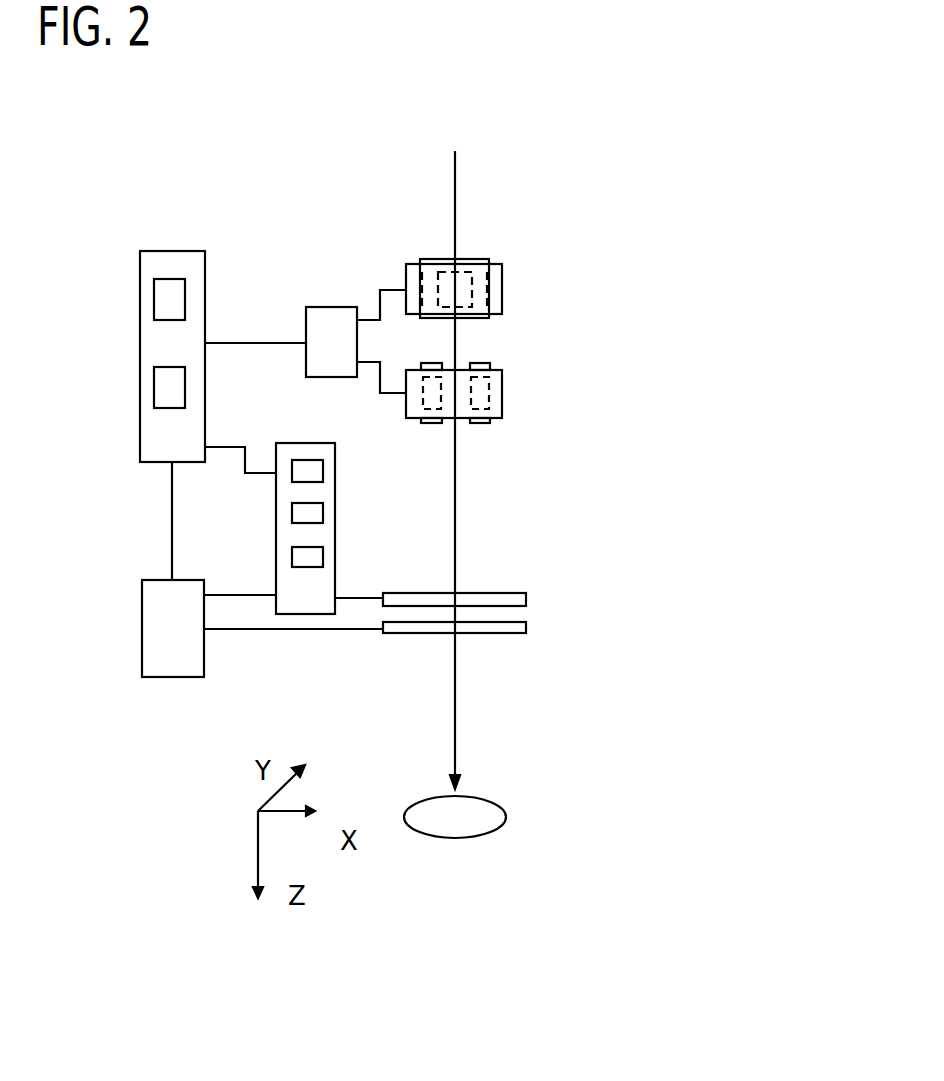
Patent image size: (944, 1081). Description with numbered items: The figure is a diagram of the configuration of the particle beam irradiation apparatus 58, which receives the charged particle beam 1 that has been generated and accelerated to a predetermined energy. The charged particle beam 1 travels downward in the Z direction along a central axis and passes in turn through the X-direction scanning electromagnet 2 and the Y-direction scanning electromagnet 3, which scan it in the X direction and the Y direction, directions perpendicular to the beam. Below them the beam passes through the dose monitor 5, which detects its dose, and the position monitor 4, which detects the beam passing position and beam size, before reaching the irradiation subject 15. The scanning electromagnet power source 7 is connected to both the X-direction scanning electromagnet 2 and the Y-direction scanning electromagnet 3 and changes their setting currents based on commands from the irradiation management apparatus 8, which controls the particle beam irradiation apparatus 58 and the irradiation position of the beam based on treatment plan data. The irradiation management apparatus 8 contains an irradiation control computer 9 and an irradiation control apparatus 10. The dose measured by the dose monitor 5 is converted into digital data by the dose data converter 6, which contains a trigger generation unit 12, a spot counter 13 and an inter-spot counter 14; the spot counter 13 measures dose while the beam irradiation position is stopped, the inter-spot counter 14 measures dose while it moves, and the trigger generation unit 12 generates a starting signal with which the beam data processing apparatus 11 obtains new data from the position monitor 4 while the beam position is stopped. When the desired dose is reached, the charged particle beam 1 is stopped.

The particle beam irradiation apparatus 58 is at (188, 121).
The charged particle beam 1 is at (456, 172).
The X-direction scanning electromagnet 2 is at (502, 285).
The Y-direction scanning electromagnet 3 is at (502, 382).
The position monitor 4 is at (527, 628).
The dose monitor 5 is at (527, 602).
The dose data converter 6 is at (274, 499).
The scanning electromagnet power source 7 is at (335, 307).
The irradiation management apparatus 8 is at (128, 323).
The irradiation control computer 9 is at (154, 300).
The irradiation control apparatus 10 is at (154, 382).
The beam data processing apparatus 11 is at (204, 655).
The trigger generation unit 12 is at (302, 460).
The spot counter 13 is at (293, 504).
The inter-spot counter 14 is at (293, 551).
The irradiation subject 15 is at (505, 817).